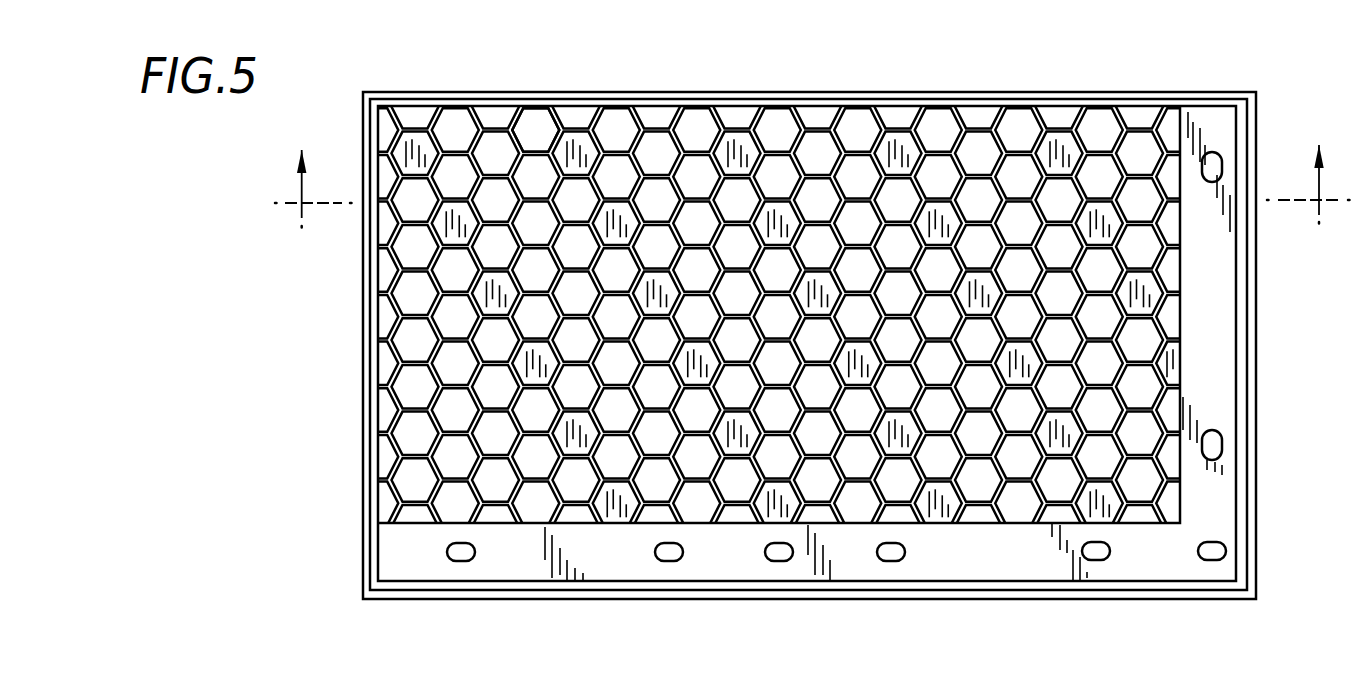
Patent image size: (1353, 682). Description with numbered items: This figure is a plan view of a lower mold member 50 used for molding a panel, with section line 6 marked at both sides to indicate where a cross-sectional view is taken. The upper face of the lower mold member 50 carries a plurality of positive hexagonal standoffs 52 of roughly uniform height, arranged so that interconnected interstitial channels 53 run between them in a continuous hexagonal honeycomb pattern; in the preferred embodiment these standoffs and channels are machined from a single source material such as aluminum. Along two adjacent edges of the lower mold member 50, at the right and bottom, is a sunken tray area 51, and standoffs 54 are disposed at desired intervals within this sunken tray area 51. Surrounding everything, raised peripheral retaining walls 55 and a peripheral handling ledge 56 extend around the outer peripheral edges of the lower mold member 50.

The lower mold member 50 is at (1266, 320).
The sunken tray area 51 is at (1212, 362).
The positive hexagonal standoffs 52 is at (650, 148).
The interconnected interstitial channels 53 is at (537, 147).
The standoffs 54 is at (1222, 443).
The raised peripheral retaining walls 55 is at (1230, 533).
The peripheral handling ledge 56 is at (1070, 600).
The section line 6- 6 is at (812, 189).